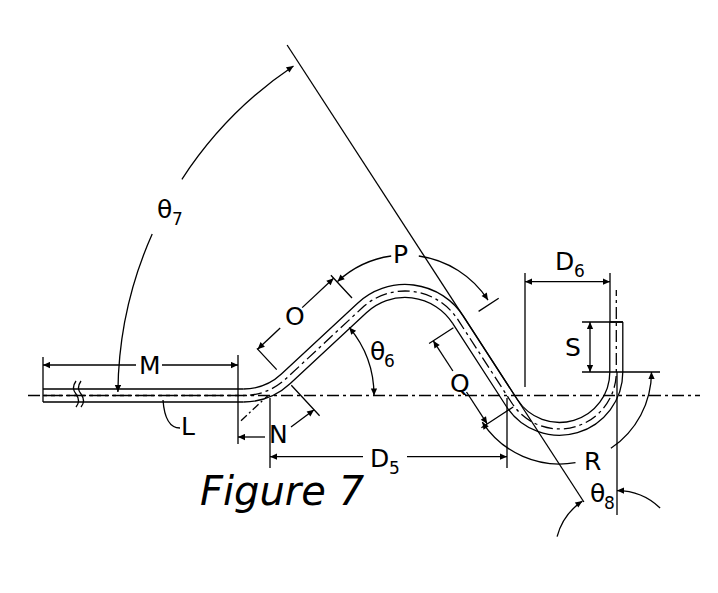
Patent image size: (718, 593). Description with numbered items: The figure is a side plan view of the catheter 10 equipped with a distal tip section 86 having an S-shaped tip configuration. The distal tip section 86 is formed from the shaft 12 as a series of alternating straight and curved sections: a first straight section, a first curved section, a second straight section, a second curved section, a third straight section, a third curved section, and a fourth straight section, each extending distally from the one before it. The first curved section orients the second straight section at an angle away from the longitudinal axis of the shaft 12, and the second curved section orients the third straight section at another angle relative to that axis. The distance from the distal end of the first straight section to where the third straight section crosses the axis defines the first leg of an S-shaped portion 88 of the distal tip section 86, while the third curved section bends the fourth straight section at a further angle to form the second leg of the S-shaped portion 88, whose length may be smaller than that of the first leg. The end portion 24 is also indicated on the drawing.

The catheter 10 is at (423, 128).
The shaft 12 is at (105, 402).
The free end portion 24 is at (617, 292).
The distal tip section 86 is at (465, 182).
The S-shaped portion 88 is at (507, 250).